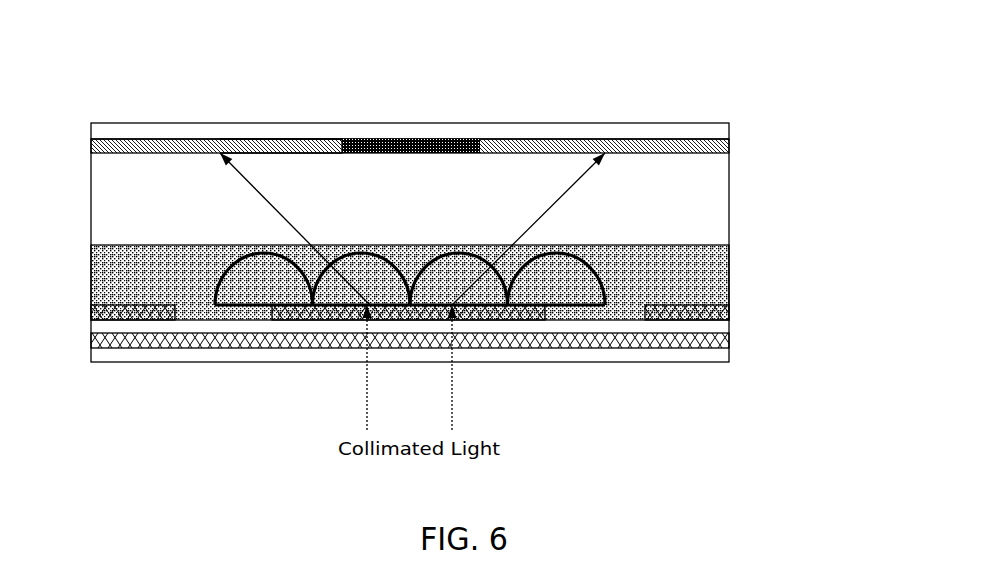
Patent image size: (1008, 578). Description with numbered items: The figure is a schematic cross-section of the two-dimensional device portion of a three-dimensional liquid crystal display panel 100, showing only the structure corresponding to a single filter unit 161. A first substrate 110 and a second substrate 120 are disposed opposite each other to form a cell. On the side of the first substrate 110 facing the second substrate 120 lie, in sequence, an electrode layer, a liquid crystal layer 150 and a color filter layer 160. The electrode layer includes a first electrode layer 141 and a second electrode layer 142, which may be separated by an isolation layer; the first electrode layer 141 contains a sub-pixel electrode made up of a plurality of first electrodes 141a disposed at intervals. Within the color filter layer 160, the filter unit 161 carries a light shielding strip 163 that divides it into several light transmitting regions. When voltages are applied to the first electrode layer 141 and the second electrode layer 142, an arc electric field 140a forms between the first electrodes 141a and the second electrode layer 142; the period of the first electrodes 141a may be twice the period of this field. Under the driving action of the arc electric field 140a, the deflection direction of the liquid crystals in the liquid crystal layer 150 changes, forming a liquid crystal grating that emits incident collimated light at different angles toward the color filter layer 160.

The 3D liquid crystal display panel 100 is at (703, 372).
The first substrate 110 is at (708, 356).
The second substrate 120 is at (710, 133).
The arc electric field 140a is at (475, 248).
The first electrode layer 141 is at (825, 290).
The first electrode 141a is at (545, 312).
The second electrode layer 142 is at (147, 343).
The liquid crystal layer 150 is at (708, 268).
The color filter layer 160 is at (732, 148).
The filter unit 161 is at (232, 148).
The light shielding strip 163 is at (392, 148).